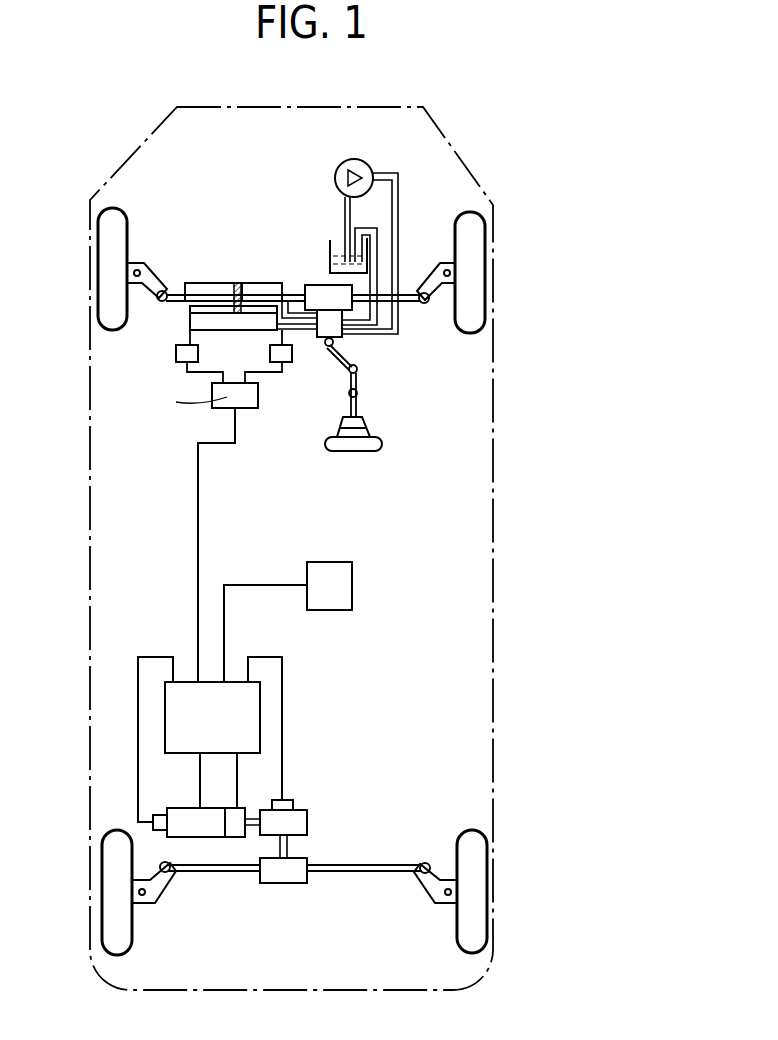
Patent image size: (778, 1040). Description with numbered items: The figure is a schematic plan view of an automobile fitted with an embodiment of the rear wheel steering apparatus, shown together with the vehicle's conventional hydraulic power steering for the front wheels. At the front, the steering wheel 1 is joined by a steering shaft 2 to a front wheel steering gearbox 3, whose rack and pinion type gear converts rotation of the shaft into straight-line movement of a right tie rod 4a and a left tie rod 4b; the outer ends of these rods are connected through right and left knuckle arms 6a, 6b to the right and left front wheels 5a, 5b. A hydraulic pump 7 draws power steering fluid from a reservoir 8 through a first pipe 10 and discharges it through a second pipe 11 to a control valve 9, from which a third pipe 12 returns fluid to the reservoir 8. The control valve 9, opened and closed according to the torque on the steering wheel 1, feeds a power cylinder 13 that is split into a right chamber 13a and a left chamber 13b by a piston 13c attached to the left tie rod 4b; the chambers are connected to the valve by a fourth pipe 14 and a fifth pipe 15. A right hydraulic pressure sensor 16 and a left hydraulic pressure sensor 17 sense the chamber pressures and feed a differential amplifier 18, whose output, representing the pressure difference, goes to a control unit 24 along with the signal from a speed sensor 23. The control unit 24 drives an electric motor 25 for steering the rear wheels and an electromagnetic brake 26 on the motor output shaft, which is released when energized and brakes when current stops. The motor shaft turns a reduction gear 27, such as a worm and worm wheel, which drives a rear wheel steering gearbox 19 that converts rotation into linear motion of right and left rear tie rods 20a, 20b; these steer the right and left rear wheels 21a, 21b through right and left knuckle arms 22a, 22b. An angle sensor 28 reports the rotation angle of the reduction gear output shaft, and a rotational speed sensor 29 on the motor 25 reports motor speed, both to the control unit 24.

The steering wheel 1 is at (382, 441).
The steering shaft 2 is at (356, 378).
The front wheel steering gearbox 3 is at (313, 292).
The right tie rod 4a is at (418, 303).
The left tie rod 4b is at (180, 295).
The right front wheel 5a is at (473, 336).
The left front wheel 5b is at (124, 222).
The right knuckle arm 6a is at (447, 267).
The left knuckle arm 6b is at (148, 270).
The hydraulic pump 7 is at (347, 161).
The reservoir 8 is at (330, 254).
The control valve 9 is at (335, 331).
The first pipe 10 is at (344, 204).
The second pipe 11 is at (401, 190).
The third pipe 12 is at (360, 229).
The power cylinder 13 is at (203, 283).
The right chamber 13a is at (257, 290).
The left chamber 13b is at (202, 307).
The piston 13c is at (237, 283).
The fourth pipe 14 is at (292, 316).
The fifth pipe 15 is at (223, 334).
The right hydraulic pressure sensor 16 is at (292, 356).
The left hydraulic pressure sensor 17 is at (176, 356).
The differential amplifier 18 is at (252, 397).
The rear wheel steering gearbox 19 is at (283, 883).
The right rear tie rod 20a is at (347, 873).
The left rear tie rod 20b is at (203, 873).
The right rear wheel 21a is at (468, 840).
The left rear wheel 21b is at (110, 829).
The right rear knuckle arm 22a is at (438, 885).
The left rear knuckle arm 22b is at (152, 900).
The speed sensor 23 is at (352, 579).
The control unit 24 is at (248, 753).
The electric motor 25 is at (192, 838).
The electromagnetic brake 26 is at (234, 833).
The reduction gear 27 is at (306, 820).
The angle sensor 28 is at (294, 799).
The rotational speed sensor 29 is at (160, 815).